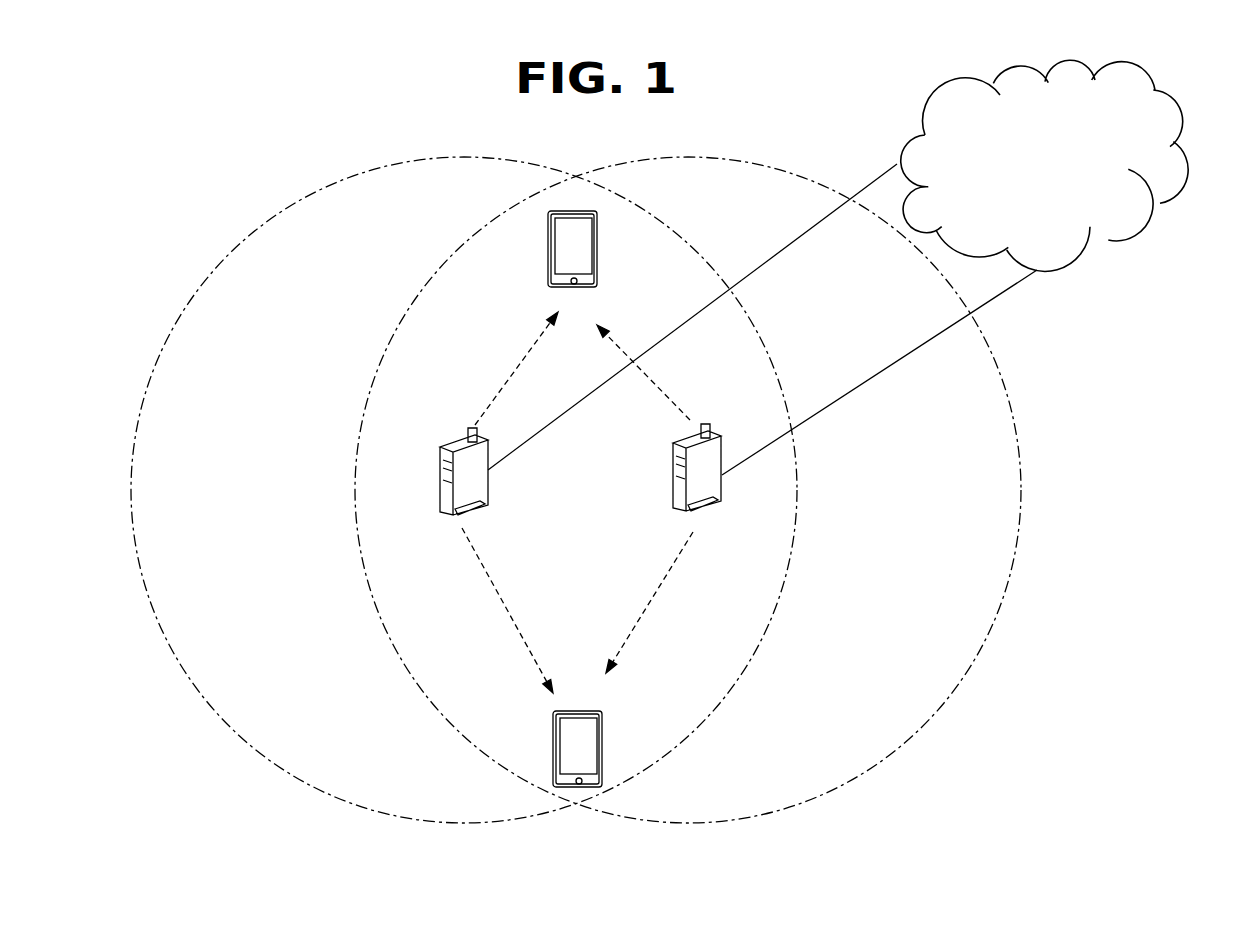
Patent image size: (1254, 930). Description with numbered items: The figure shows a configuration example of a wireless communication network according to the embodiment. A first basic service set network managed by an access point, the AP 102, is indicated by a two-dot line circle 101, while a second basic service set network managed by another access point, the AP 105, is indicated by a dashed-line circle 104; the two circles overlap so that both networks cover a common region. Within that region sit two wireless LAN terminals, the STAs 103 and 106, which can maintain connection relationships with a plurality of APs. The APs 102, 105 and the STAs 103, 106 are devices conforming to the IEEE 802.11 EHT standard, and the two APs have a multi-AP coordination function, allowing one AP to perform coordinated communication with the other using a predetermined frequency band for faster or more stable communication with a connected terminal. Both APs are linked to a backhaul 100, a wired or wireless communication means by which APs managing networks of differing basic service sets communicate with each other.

The backhaul 100 is at (1133, 237).
The two-dot line circle 101 is at (455, 824).
The AP 102 is at (453, 443).
The STA 103 is at (548, 268).
The dashed-line circle 104 is at (685, 825).
The AP 105 is at (673, 490).
The STA 106 is at (603, 730).